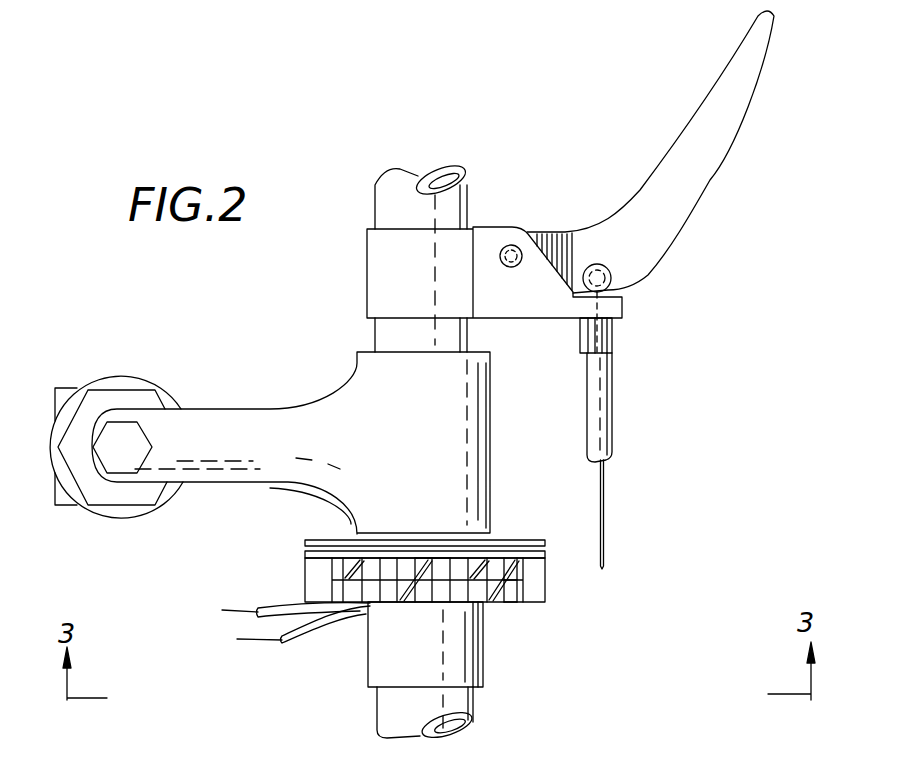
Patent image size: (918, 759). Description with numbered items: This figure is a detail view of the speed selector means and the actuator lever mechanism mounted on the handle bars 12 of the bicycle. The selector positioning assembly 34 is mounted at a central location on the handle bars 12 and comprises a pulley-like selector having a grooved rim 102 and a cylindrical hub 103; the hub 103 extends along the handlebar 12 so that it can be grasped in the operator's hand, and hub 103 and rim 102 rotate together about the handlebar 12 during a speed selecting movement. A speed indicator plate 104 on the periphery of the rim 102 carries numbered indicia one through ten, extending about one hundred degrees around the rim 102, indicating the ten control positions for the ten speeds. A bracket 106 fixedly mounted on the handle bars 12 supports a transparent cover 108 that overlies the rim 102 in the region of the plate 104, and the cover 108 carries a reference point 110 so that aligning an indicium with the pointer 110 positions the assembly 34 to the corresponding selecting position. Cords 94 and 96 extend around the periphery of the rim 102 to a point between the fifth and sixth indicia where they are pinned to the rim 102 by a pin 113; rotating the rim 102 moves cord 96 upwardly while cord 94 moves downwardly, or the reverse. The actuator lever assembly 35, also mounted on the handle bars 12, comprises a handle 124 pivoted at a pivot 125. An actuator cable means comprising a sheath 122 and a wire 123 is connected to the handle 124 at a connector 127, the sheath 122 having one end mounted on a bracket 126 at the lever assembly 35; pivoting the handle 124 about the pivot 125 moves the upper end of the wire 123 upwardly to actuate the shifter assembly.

The handle bars 12 is at (470, 704).
The selector positioning assembly 34 is at (562, 601).
The actuator lever assembly 35 is at (634, 320).
The cord 94 is at (252, 643).
The cord 96 is at (242, 613).
The grooved rim 102 is at (308, 572).
The cylindrical hub 103 is at (467, 668).
The speed indicator plate 104 is at (545, 583).
The bracket 106 is at (532, 538).
The transparent cover 108 is at (515, 602).
The reference point 110 is at (425, 556).
The pin 113 is at (434, 556).
The sheath 122 is at (613, 430).
The wire 123 is at (605, 490).
The handle 124 is at (662, 228).
The pivot 125 is at (516, 246).
The bracket 126 is at (553, 306).
The connector 127 is at (612, 278).